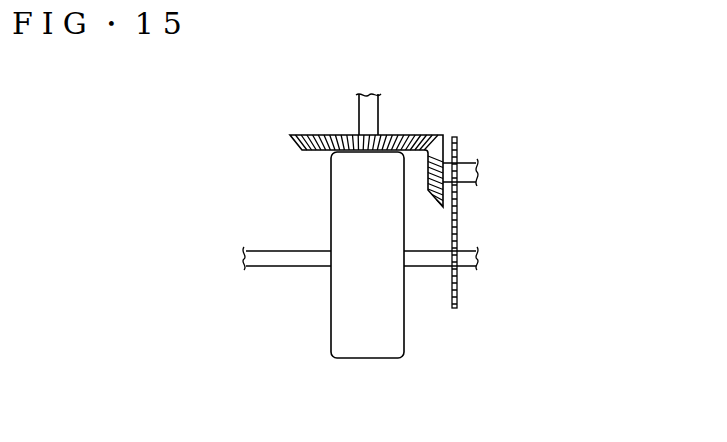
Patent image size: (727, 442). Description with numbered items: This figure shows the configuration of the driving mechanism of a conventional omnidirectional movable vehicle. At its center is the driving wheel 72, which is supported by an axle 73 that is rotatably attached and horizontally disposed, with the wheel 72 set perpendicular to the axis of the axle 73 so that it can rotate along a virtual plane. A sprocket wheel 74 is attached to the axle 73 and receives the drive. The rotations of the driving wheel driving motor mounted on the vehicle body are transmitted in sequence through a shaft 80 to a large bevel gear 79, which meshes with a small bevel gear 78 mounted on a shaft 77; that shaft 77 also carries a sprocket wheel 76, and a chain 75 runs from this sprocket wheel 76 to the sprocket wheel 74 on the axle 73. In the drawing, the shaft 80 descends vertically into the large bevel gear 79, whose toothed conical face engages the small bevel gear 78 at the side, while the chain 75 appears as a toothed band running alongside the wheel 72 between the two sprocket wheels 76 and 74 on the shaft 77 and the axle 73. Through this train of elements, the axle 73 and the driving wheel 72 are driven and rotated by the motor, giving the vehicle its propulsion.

The wheel 72 is at (338, 308).
The axle 73 is at (424, 263).
The sprocket wheel 74 is at (458, 297).
The chain 75 is at (460, 222).
The sprocket wheel 76 is at (458, 150).
The shaft 77 is at (462, 183).
The small bevel gear 78 is at (427, 178).
The large bevel gear 79 is at (297, 145).
The shaft 80 is at (358, 117).